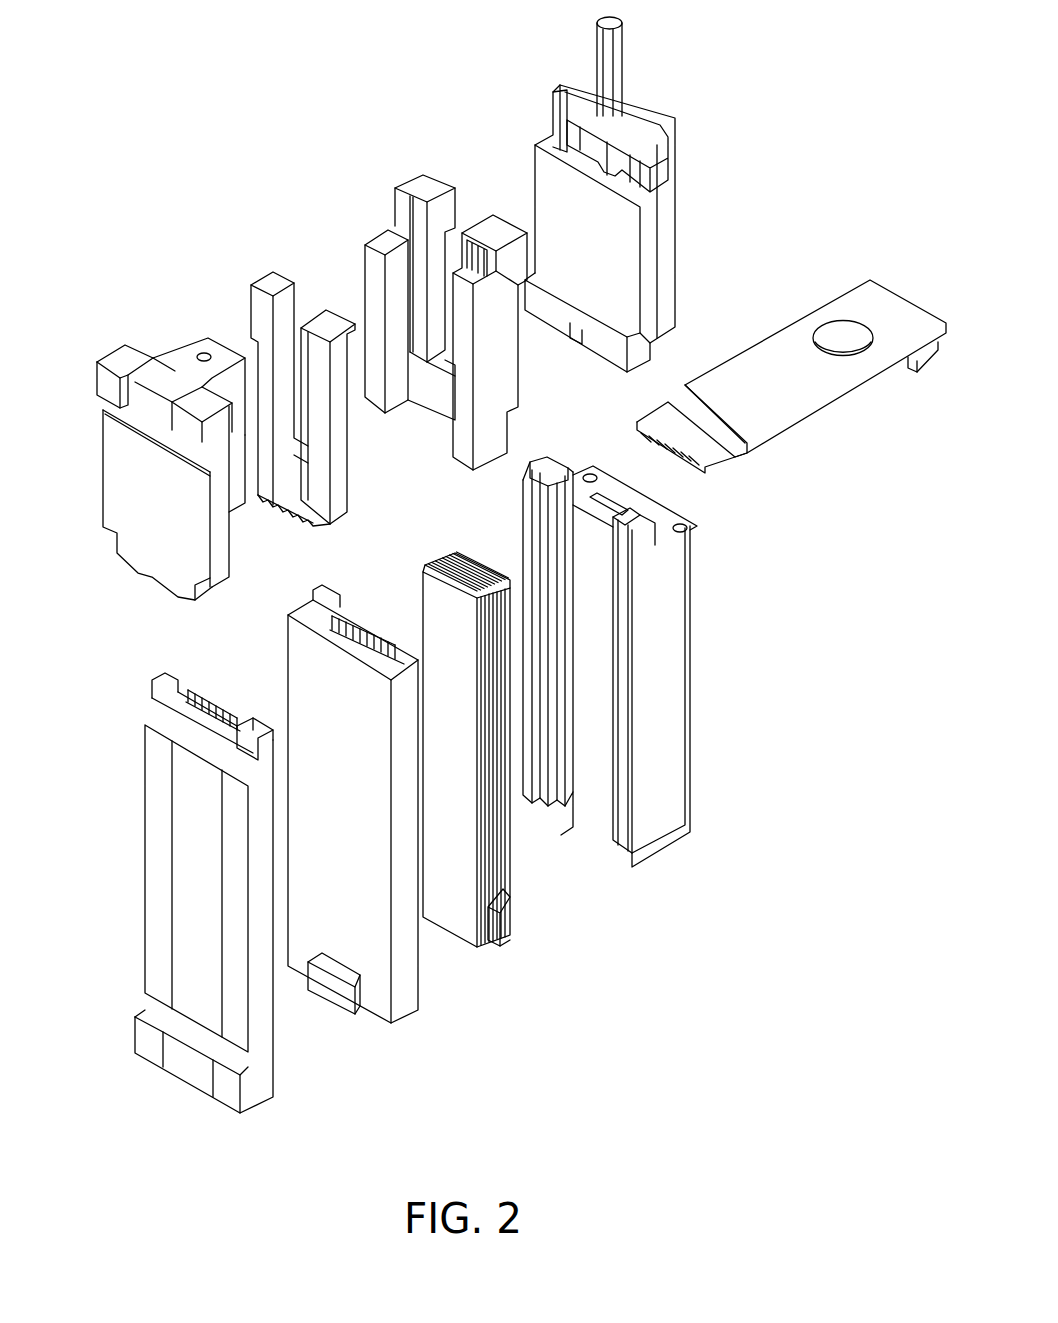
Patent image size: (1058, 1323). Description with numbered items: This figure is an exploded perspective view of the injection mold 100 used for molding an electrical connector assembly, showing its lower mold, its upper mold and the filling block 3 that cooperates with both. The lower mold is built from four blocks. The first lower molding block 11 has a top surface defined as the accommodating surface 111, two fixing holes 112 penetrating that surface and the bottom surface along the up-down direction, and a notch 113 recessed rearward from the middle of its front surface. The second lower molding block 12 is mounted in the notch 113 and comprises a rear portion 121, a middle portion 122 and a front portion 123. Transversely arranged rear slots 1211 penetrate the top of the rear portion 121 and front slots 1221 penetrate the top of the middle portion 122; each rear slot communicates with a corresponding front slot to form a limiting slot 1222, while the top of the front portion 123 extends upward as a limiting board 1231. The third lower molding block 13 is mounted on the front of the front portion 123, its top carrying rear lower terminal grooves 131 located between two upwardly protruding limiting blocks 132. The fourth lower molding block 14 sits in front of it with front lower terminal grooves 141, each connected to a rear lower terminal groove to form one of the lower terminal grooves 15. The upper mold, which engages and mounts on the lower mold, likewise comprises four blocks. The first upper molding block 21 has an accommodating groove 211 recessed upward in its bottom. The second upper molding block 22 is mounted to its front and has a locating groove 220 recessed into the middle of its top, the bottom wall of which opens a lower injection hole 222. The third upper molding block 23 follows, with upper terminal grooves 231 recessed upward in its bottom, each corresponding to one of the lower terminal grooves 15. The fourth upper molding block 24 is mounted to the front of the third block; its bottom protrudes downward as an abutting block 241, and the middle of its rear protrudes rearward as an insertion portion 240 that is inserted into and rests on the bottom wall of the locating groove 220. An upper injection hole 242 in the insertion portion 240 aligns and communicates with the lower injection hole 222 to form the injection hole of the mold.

The injection mold 100 is at (72, 44).
The first lower molding block 11 is at (647, 797).
The accommodating surface 111 is at (661, 507).
The fixing hole 112 is at (688, 530).
The notch 113 is at (593, 750).
The second lower molding block 12 is at (525, 980).
The rear portion 121 is at (498, 882).
The middle portion 122 is at (480, 915).
The front portion 123 is at (483, 912).
The rear slots 1211 is at (440, 560).
The front slots 1221 is at (437, 568).
The limiting slot 1222 is at (446, 480).
The limiting board 1231 is at (433, 567).
The third lower molding block 13 is at (402, 951).
The rear lower terminal grooves 131 is at (326, 646).
The limiting blocks 132 is at (322, 600).
The fourth lower molding block 14 is at (178, 858).
The front lower terminal grooves 141 is at (200, 692).
The lower terminal grooves 15 is at (192, 618).
The first upper molding block 21 is at (547, 190).
The accommodating groove 211 is at (575, 340).
The second upper molding block 22 is at (432, 220).
The locating groove 220 is at (477, 210).
The lower injection hole 222 is at (444, 363).
The third upper molding block 23 is at (278, 299).
The upper terminal grooves 231 is at (287, 506).
The fourth upper molding block 24 is at (124, 481).
The insertion portion 240 is at (237, 395).
The abutting block 241 is at (148, 573).
The upper injection hole 242 is at (203, 352).
The filling block 3 is at (769, 381).